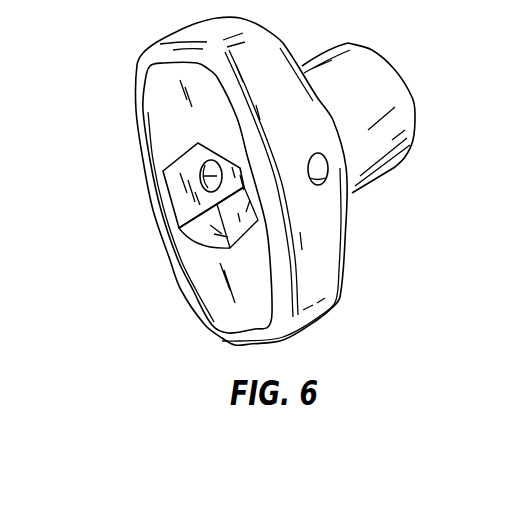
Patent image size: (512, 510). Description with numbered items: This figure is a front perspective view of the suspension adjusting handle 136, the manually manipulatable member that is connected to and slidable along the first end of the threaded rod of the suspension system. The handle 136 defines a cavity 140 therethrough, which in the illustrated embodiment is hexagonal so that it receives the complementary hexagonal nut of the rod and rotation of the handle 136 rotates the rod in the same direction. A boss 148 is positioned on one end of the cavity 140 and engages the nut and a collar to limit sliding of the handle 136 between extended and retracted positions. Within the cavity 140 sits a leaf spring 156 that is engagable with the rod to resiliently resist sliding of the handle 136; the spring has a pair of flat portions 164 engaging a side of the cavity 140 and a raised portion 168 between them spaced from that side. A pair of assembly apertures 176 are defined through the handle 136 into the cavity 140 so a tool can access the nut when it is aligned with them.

The handle 136 is at (396, 268).
The cavity 140 is at (188, 206).
The boss 148 is at (415, 107).
The leaf spring 156 is at (182, 232).
The flat portions 164 is at (204, 244).
The raised portion 168 is at (226, 168).
The assembly apertures 176 is at (192, 155).